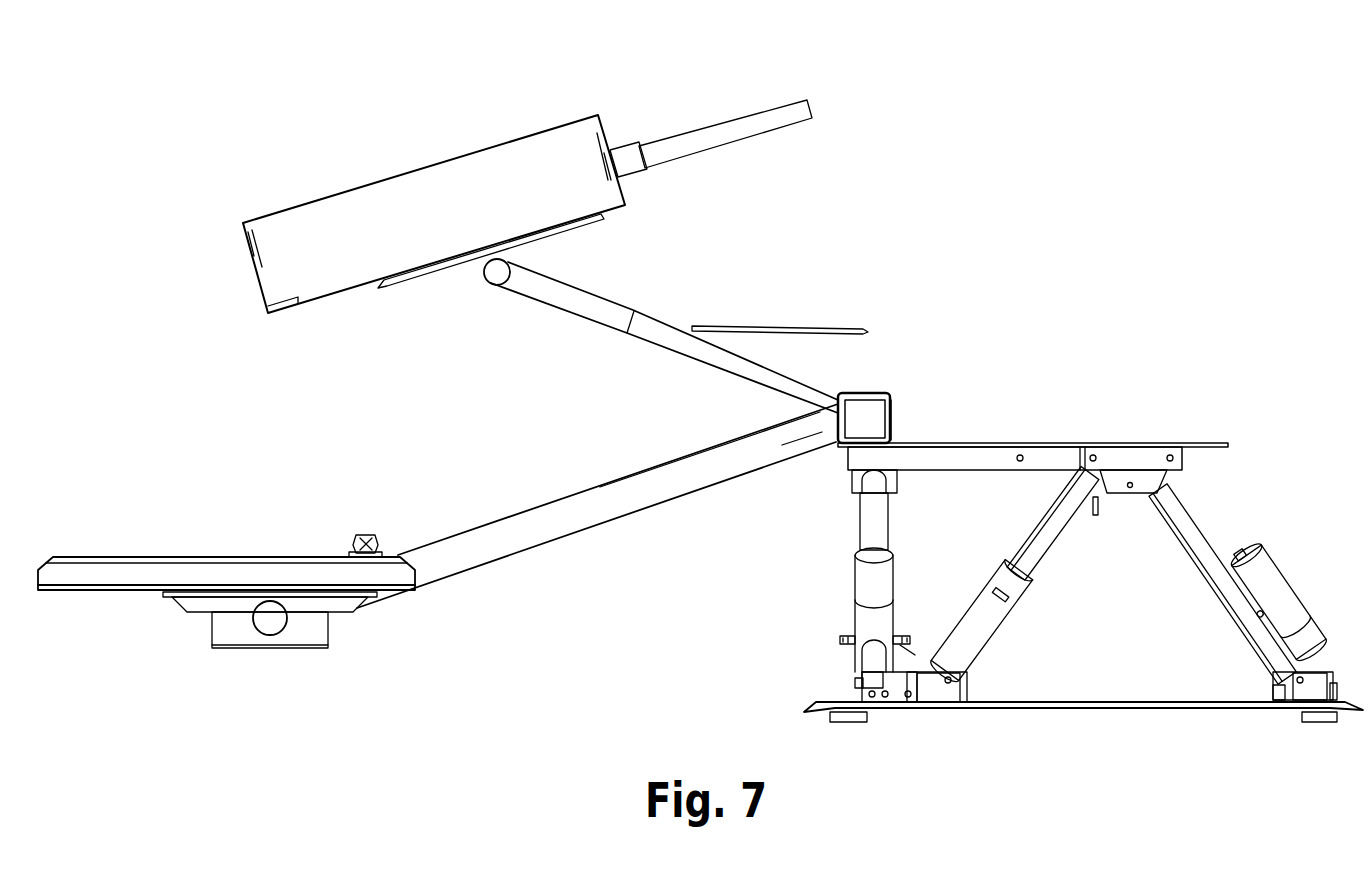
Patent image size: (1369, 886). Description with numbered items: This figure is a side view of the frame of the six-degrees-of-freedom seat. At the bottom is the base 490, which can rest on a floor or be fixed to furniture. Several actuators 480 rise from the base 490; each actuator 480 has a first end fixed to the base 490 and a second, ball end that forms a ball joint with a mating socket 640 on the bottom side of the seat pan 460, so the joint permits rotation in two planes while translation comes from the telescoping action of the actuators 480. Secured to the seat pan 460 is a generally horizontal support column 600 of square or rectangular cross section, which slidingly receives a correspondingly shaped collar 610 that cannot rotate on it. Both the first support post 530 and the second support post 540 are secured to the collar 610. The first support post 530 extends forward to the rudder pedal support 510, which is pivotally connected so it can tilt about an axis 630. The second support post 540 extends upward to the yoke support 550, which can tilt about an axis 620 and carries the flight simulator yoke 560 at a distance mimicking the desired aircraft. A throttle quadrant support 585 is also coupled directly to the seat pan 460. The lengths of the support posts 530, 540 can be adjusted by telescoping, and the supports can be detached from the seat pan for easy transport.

The seat pan 460 is at (1208, 443).
The actuators 480 is at (890, 525).
The base 490 is at (1163, 713).
The rudder pedal support 510 is at (94, 595).
The first support post 530 is at (492, 562).
The second support post 540 is at (688, 358).
The yoke support 550 is at (400, 289).
The flight simulator yoke 560 is at (502, 98).
The throttle quadrant support 585 is at (810, 325).
The support column 600 is at (867, 408).
The collar 610 is at (891, 419).
The axis 620 is at (500, 272).
The axis 630 is at (270, 622).
The socket 640 is at (850, 482).